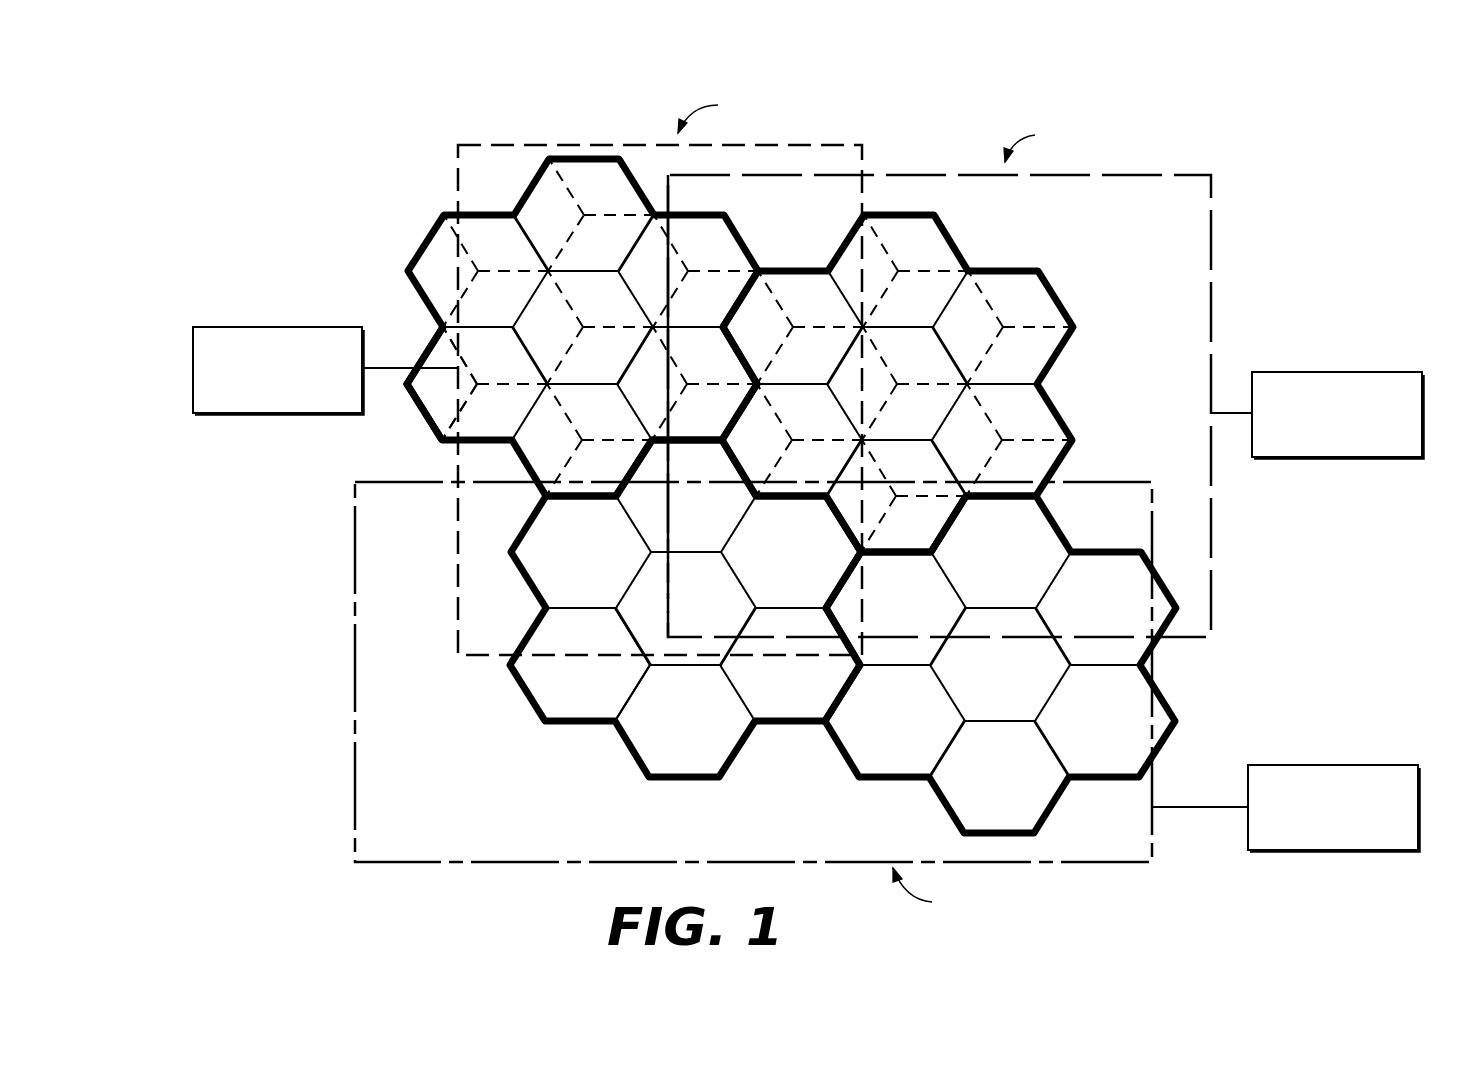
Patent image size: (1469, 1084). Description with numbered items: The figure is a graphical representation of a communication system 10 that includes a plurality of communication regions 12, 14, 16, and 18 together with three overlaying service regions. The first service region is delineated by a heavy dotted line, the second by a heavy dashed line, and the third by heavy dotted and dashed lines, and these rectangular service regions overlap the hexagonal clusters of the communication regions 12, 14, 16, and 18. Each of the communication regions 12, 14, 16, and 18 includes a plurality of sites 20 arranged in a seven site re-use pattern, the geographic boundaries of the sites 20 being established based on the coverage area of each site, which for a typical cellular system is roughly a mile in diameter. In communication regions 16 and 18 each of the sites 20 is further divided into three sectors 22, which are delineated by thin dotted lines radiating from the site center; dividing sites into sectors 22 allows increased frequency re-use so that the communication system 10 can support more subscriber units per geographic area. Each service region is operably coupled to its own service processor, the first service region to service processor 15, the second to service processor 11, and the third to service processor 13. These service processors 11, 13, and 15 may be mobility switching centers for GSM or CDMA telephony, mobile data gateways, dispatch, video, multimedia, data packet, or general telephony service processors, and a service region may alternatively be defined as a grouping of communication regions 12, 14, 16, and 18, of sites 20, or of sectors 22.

The communication system 10 is at (418, 903).
The service processor 11 is at (1375, 372).
The communication region 12 is at (618, 748).
The service processor 13 is at (1370, 765).
The communication region 14 is at (895, 783).
The service processor 15 is at (242, 327).
The communication region 16 is at (1000, 262).
The communication region 18 is at (450, 202).
The site 20 is at (547, 678).
The sector 22 is at (440, 390).